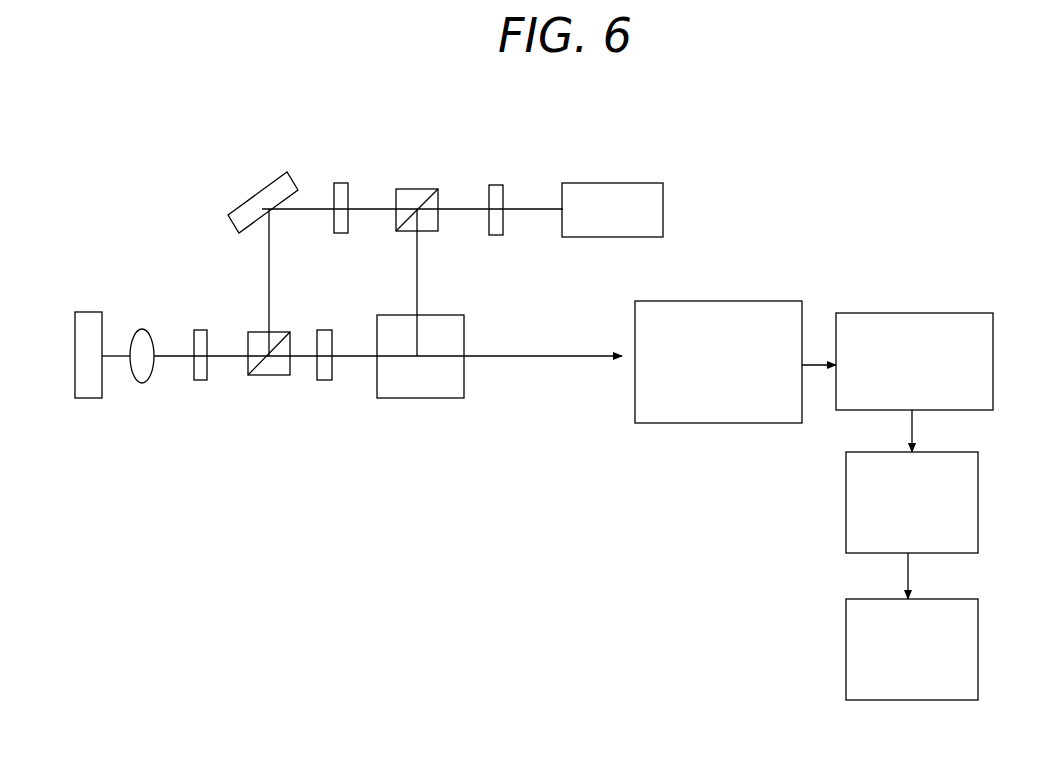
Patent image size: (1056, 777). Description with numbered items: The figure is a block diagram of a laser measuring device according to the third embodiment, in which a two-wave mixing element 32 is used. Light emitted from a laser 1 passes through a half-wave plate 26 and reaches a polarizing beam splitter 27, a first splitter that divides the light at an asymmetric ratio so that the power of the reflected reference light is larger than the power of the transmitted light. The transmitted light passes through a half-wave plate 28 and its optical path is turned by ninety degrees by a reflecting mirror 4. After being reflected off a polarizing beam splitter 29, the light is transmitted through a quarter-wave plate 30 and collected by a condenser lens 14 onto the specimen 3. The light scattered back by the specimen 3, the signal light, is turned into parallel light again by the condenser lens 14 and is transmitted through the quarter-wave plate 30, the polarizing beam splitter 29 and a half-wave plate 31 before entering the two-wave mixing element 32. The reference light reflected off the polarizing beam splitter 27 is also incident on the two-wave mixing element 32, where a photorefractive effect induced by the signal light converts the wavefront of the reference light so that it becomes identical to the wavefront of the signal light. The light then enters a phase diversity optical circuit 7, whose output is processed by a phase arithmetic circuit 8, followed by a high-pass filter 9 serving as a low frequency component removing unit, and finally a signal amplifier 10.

The laser 1 is at (633, 205).
The specimen 3 is at (85, 327).
The reflecting mirror 4 is at (250, 212).
The phase diversity optical circuit 7 is at (740, 312).
The phase arithmetic circuit 8 is at (968, 322).
The high-pass filter 9 is at (970, 505).
The signal amplifier 10 is at (970, 660).
The condenser lens 14 is at (143, 368).
The λ/2 plate 26 is at (499, 193).
The polarizing beam splitter 27 is at (408, 195).
The λ/2 plate 28 is at (342, 195).
The polarizing beam splitter 29 is at (268, 368).
The λ/4 plate 30 is at (198, 335).
The λ/2 plate 31 is at (323, 372).
The two-wave mixing element 32 is at (423, 390).